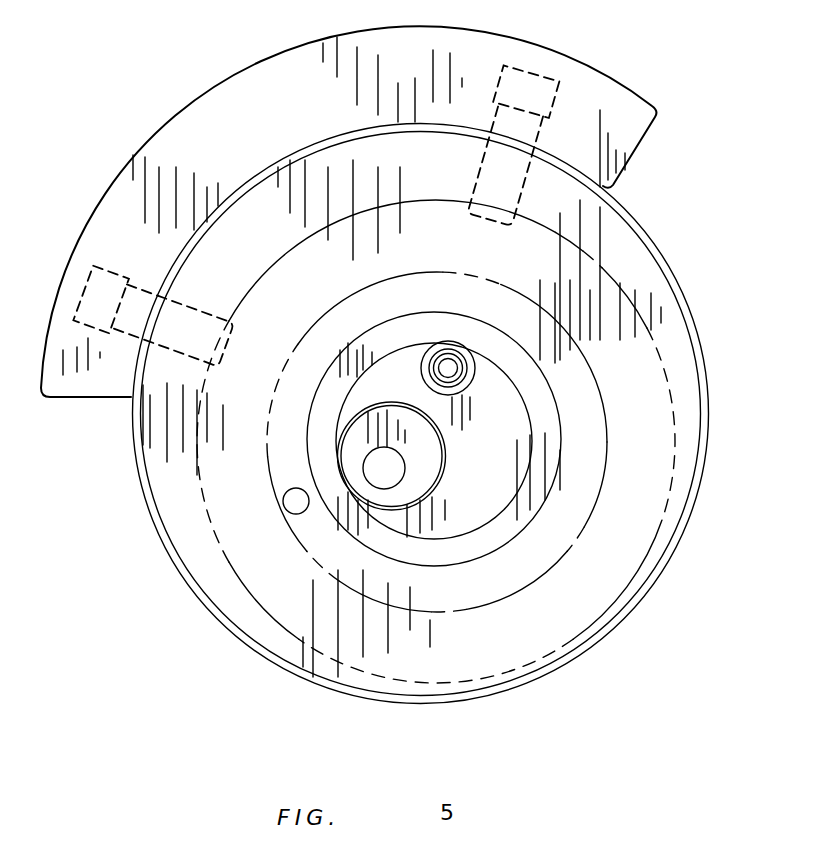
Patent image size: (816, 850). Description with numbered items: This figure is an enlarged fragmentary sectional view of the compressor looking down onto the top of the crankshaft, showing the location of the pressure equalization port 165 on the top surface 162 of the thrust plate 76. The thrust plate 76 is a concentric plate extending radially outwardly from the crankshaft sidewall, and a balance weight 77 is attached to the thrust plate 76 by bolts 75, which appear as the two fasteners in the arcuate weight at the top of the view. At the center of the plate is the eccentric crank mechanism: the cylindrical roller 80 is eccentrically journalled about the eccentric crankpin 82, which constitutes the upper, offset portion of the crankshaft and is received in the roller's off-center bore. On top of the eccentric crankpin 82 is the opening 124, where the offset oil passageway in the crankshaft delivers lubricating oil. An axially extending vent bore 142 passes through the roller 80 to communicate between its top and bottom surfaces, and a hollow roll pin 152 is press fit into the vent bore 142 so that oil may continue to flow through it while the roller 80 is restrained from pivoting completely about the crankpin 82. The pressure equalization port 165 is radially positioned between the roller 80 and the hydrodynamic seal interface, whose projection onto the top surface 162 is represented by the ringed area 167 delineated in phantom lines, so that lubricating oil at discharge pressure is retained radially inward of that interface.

The bolts 75 is at (113, 270).
The thrust plate 76 is at (697, 320).
The balance weight 77 is at (265, 88).
The cylindrical roller 80 is at (497, 535).
The eccentric crankpin 82 is at (422, 440).
The opening 124 is at (403, 477).
The vent bore 142 is at (427, 350).
The hollow roll pin 152 is at (460, 383).
The top surface 162 is at (683, 400).
The pressure equalization port 165 is at (285, 508).
The ringed area 167 is at (510, 672).